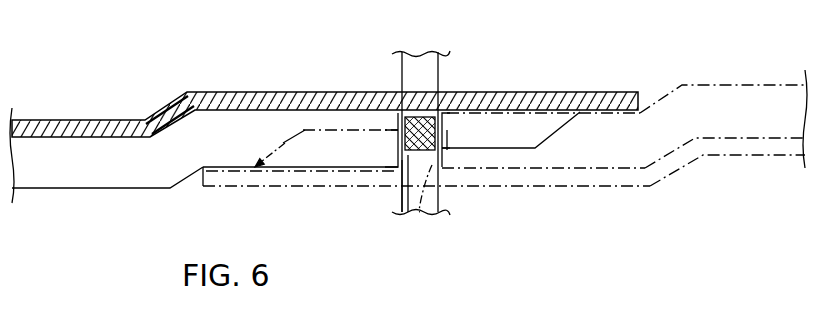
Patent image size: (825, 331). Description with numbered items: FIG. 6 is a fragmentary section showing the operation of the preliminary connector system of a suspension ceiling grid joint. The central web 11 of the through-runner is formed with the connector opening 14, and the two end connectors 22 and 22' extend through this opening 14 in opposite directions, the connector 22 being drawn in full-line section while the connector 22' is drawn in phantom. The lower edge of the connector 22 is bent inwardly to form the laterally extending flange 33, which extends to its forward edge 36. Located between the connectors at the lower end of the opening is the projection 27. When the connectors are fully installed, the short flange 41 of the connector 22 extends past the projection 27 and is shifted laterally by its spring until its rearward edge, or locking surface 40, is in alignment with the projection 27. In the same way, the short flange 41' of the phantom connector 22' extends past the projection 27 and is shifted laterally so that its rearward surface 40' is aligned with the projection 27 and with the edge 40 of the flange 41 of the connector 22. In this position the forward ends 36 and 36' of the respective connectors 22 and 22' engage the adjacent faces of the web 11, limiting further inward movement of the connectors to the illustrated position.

The central web 11 is at (402, 205).
The connector opening 14 is at (438, 200).
The end connector 22 is at (325, 87).
The end connector 22' is at (627, 114).
The projection 27 is at (433, 90).
The opposed flange 33 is at (130, 178).
The forward end 36 is at (395, 210).
The forward end 36' is at (442, 213).
The rearwardly facing lateral surface 40 is at (440, 140).
The rearwardly facing lateral surface 40' is at (376, 86).
The short flange 41 is at (511, 135).
The short flange 41' is at (314, 178).